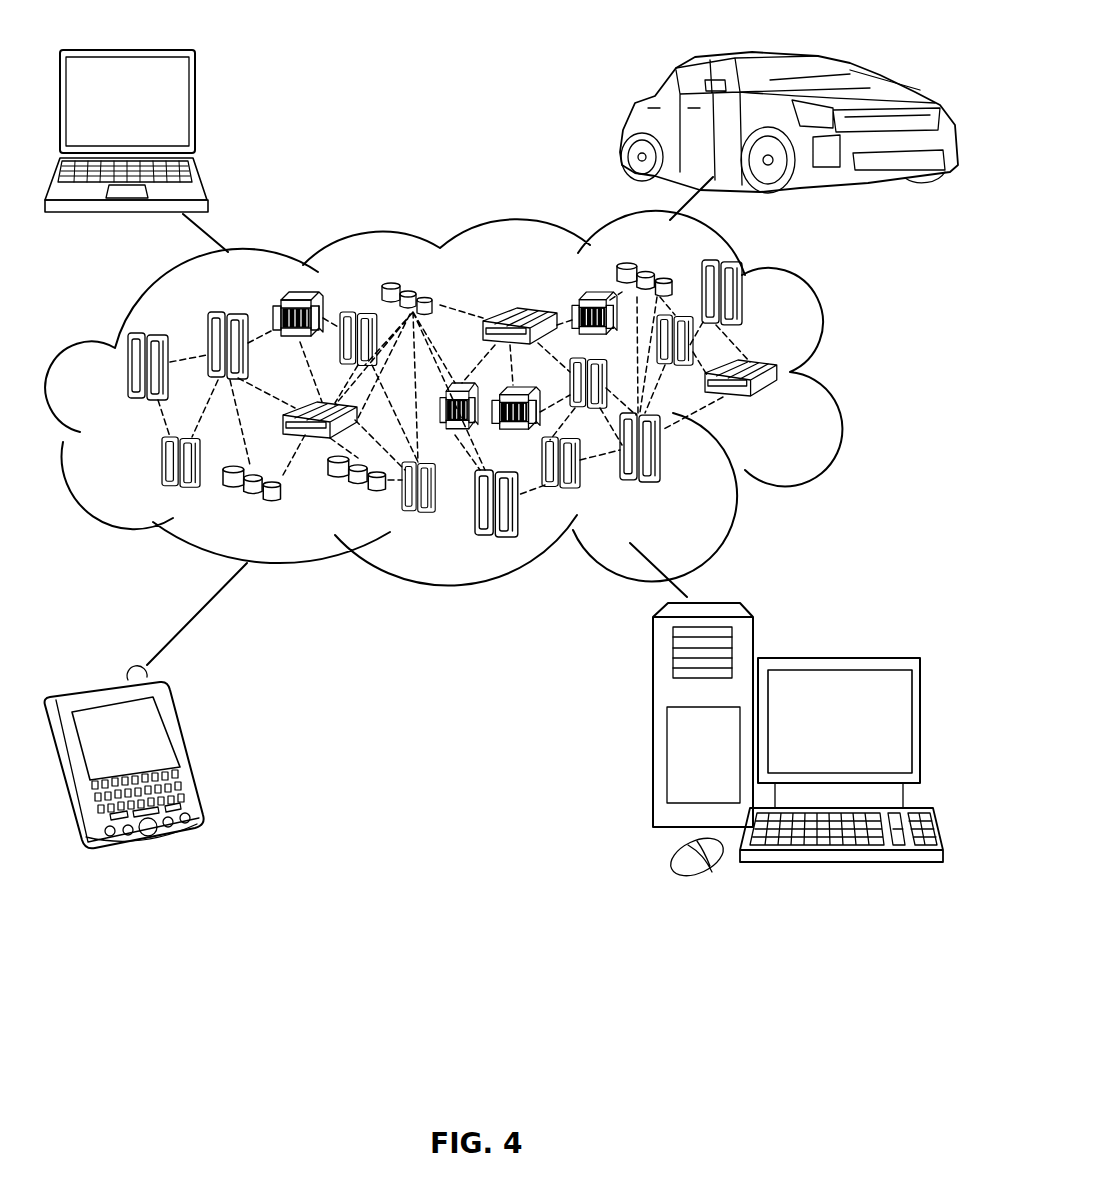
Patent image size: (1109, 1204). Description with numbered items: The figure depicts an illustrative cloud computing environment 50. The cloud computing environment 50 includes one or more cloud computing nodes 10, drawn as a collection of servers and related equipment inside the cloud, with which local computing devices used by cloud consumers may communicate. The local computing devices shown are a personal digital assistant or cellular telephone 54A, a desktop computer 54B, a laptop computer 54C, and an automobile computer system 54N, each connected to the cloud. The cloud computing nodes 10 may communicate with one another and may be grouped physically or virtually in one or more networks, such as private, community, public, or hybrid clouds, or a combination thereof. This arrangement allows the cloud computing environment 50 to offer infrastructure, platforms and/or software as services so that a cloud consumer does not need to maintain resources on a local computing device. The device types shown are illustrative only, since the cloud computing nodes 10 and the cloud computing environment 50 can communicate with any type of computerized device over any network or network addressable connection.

The cloud computing environment 50 is at (840, 375).
The cloud computing nodes 10 is at (781, 407).
The personal digital assistant or cellular telephone 54A is at (185, 750).
The desktop computer 54B is at (837, 657).
The laptop computer 54C is at (195, 109).
The automobile computer system 54N is at (620, 127).